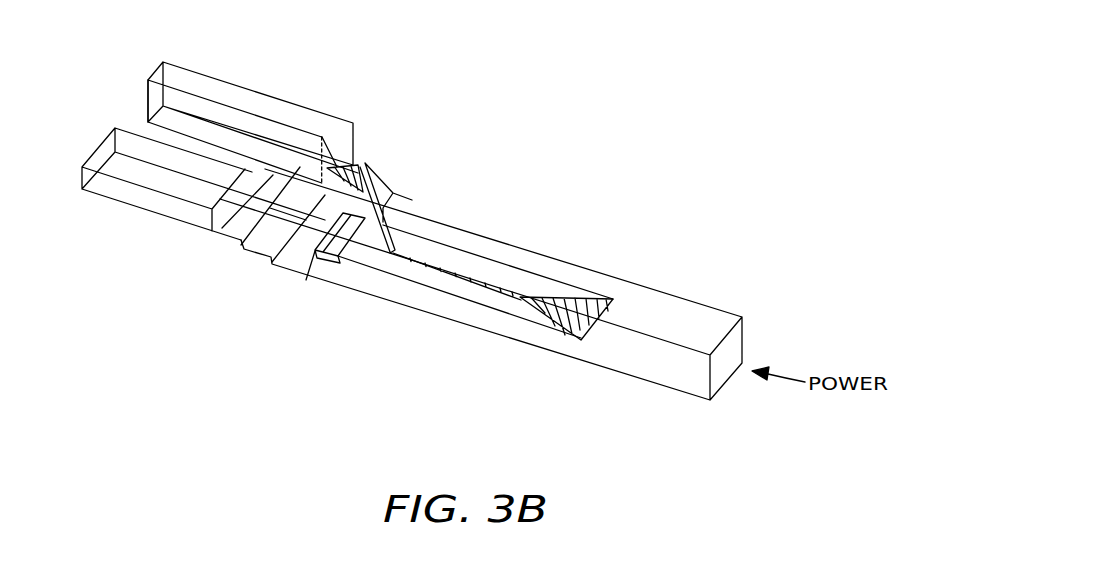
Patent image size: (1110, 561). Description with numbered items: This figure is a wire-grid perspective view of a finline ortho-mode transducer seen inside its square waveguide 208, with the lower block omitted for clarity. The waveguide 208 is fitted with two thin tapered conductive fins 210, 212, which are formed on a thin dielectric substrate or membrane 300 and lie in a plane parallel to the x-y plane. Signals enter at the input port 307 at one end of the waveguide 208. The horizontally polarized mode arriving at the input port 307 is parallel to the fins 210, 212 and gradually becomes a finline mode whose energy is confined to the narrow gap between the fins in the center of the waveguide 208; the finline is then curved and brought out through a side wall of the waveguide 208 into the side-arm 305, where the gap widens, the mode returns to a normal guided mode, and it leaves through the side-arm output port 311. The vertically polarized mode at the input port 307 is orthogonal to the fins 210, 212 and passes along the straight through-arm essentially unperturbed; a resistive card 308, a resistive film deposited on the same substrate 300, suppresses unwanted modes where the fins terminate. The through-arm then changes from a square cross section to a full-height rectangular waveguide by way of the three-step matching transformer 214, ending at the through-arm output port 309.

The square waveguide 208 is at (642, 373).
The fin 210 is at (495, 292).
The fin 212 is at (478, 265).
The three-step matching transformer 214 is at (214, 244).
The dielectric substrate 300 is at (358, 166).
The side-arm 305 is at (239, 84).
The input port 307 is at (760, 340).
The resistive card 308 is at (316, 268).
The output port 309 is at (92, 153).
The output port 311 is at (148, 79).